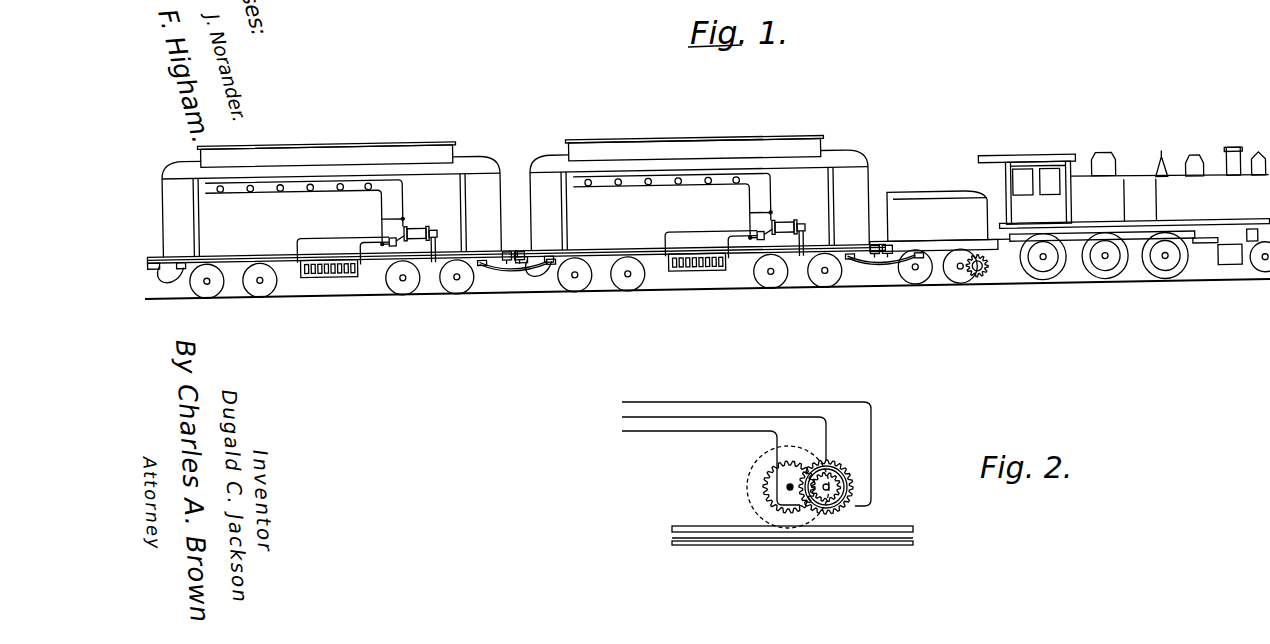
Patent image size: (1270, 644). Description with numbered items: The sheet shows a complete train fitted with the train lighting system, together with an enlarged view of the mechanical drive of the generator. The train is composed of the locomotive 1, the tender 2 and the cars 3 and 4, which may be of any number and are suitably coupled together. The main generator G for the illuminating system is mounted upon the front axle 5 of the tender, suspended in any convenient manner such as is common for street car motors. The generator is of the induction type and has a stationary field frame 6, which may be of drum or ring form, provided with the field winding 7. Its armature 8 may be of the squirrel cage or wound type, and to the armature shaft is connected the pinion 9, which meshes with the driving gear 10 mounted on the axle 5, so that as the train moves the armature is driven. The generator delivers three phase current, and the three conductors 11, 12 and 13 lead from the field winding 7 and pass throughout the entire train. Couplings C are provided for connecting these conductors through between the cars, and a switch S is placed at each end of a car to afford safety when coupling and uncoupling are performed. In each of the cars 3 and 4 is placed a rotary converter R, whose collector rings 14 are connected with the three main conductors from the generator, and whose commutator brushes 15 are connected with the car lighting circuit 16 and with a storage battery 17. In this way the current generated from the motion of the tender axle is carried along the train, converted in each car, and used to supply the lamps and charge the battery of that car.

In FIG. 1, the locomotive 1 is at (1117, 183).
In FIG. 1, the tender 2 is at (923, 205).
In FIG. 1, the car 3 is at (652, 160).
In FIG. 1, the car 4 is at (340, 162).
In FIG. 2, the front axle 5 is at (787, 490).
In FIG. 2, the stationary field frame 6 is at (843, 466).
In FIG. 2, the field winding 7 is at (847, 468).
In FIG. 2, the armature 8 is at (849, 484).
In FIG. 2, the pinion 9 is at (830, 494).
In FIG. 2, the driving gear 10 is at (770, 482).
In FIG. 2, the conductor 11 is at (707, 402).
In FIG. 2, the conductor 12 is at (656, 414).
In FIG. 2, the conductor 13 is at (675, 432).
In FIG. 1, the collector rings 14 is at (434, 240).
In FIG. 1, the commutator brushes 15 is at (390, 246).
In FIG. 1, the car lighting circuit 16 is at (320, 192).
In FIG. 1, the storage battery 17 is at (333, 284).
In FIG. 1, the rotary converter R is at (421, 233).
In FIG. 1, the switch S is at (485, 272).
In FIG. 1, the coupling C is at (516, 276).
In FIG. 1, the main generator G is at (982, 283).
In FIG. 2, the main generator G is at (838, 506).